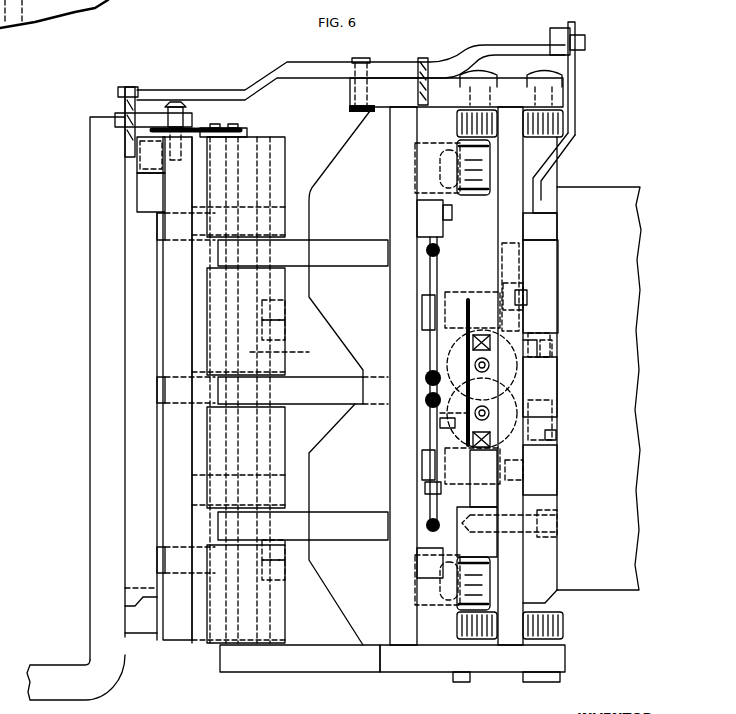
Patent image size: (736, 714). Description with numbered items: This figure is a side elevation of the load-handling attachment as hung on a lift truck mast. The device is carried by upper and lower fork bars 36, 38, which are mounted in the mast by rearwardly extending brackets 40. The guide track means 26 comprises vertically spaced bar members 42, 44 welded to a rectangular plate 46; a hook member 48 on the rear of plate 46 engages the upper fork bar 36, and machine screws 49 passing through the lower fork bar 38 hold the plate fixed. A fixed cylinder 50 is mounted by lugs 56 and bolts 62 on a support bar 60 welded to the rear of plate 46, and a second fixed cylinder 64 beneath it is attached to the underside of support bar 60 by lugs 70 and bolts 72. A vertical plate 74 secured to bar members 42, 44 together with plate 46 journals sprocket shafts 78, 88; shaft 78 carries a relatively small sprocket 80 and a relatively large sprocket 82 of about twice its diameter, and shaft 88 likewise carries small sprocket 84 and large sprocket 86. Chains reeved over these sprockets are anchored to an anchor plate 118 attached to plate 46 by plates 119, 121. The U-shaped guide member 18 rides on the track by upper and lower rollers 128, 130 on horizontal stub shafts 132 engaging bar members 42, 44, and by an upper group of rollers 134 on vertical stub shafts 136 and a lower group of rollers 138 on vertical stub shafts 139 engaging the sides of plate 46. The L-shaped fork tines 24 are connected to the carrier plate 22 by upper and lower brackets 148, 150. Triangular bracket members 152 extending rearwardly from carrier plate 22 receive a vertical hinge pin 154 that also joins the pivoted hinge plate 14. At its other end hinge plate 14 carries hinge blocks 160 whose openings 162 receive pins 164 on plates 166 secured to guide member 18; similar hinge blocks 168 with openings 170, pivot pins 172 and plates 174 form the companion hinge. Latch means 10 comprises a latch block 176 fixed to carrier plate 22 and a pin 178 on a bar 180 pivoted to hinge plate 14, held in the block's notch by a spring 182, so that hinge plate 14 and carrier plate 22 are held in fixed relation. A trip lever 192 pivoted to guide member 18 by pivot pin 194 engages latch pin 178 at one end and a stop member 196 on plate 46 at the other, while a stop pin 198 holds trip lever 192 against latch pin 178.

The latch means 10 is at (118, 164).
The hinge plate 14 is at (180, 632).
The guide member 18 is at (395, 675).
The carrier plate 22 is at (138, 338).
The fork tines 24 is at (50, 672).
The guide track means 26 is at (462, 635).
The upper fork bar 36 is at (550, 207).
The lower fork bar 38 is at (548, 592).
The brackets 40 is at (628, 262).
The bar member 42 is at (485, 232).
The bar member 44 is at (505, 548).
The rectangular plate 46 is at (513, 270).
The hook member 48 is at (553, 165).
The machine screws 49 is at (550, 525).
The fixed cylinder 50 is at (465, 352).
The lugs 56 is at (553, 352).
The support bar 60 is at (548, 392).
The bolts 62 is at (538, 335).
The fixed cylinder 64 is at (450, 420).
The lugs 70 is at (553, 423).
The bolts 72 is at (553, 437).
The plate 74 is at (460, 402).
The sprocket shaft 78 is at (420, 313).
The small sprocket 80 is at (520, 298).
The large sprocket 82 is at (435, 268).
The small sprocket 84 is at (520, 466).
The large sprocket 86 is at (430, 488).
The sprocket shaft 88 is at (425, 468).
The anchor plate 118 is at (458, 403).
The plate 119 is at (515, 272).
The plate 121 is at (497, 497).
The upper roller 128 is at (480, 160).
The lower roller 130 is at (483, 584).
The stub shafts 132 is at (413, 160).
The upper group of rollers 134 is at (457, 125).
The stub shafts 136 is at (480, 70).
The lower group of rollers 138 is at (457, 625).
The stub shafts 139 is at (555, 680).
The upper bracket 148 is at (145, 183).
The lower bracket 150 is at (147, 637).
The bracket members 152 is at (160, 226).
The hinge pin 154 is at (243, 116).
The hinge blocks 160 is at (282, 140).
The openings 162 is at (272, 178).
The pins 164 is at (270, 225).
The plates 166 is at (302, 266).
The hinge blocks 168 is at (282, 312).
The openings 170 is at (284, 323).
The pivot pins 172 is at (309, 353).
The plates 174 is at (303, 404).
The latch block 176 is at (122, 155).
The pin 178 is at (122, 107).
The bar 180 is at (148, 113).
The spring 182 is at (198, 122).
The trip lever 192 is at (287, 62).
The pivot pin 194 is at (362, 58).
The stop member 196 is at (573, 63).
The stop pin 198 is at (423, 58).